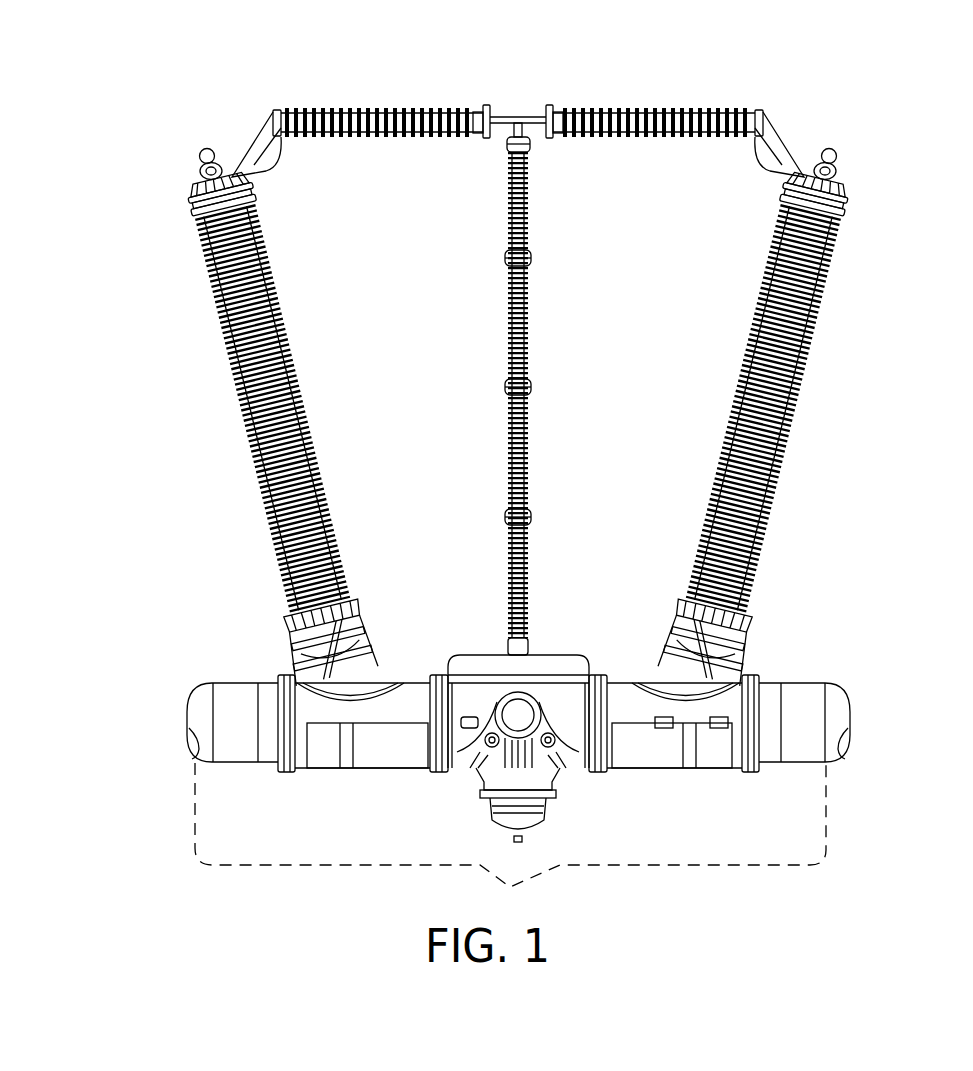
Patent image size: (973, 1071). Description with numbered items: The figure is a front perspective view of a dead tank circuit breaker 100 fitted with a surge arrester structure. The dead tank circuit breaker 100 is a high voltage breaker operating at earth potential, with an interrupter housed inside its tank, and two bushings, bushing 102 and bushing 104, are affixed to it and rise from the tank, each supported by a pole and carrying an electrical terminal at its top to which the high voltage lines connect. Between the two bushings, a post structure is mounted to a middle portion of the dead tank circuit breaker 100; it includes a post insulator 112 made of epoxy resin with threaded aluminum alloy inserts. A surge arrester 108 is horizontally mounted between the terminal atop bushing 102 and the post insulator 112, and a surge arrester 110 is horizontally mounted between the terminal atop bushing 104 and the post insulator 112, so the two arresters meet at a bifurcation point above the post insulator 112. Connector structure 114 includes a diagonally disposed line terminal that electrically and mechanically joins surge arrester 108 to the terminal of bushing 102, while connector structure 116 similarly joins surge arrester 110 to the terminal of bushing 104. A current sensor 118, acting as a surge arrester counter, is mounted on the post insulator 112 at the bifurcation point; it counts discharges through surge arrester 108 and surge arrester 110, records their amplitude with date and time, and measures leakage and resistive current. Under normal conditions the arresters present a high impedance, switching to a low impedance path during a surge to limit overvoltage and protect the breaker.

The dead tank circuit breaker 100 is at (518, 790).
The bushing 102 is at (226, 350).
The bushing 104 is at (806, 368).
The surge arrester 108 is at (372, 110).
The surge arrester 110 is at (662, 110).
The post insulator 112 is at (528, 355).
The connector structure 114 is at (258, 138).
The connector structure 116 is at (781, 137).
The current sensor 118 is at (520, 117).